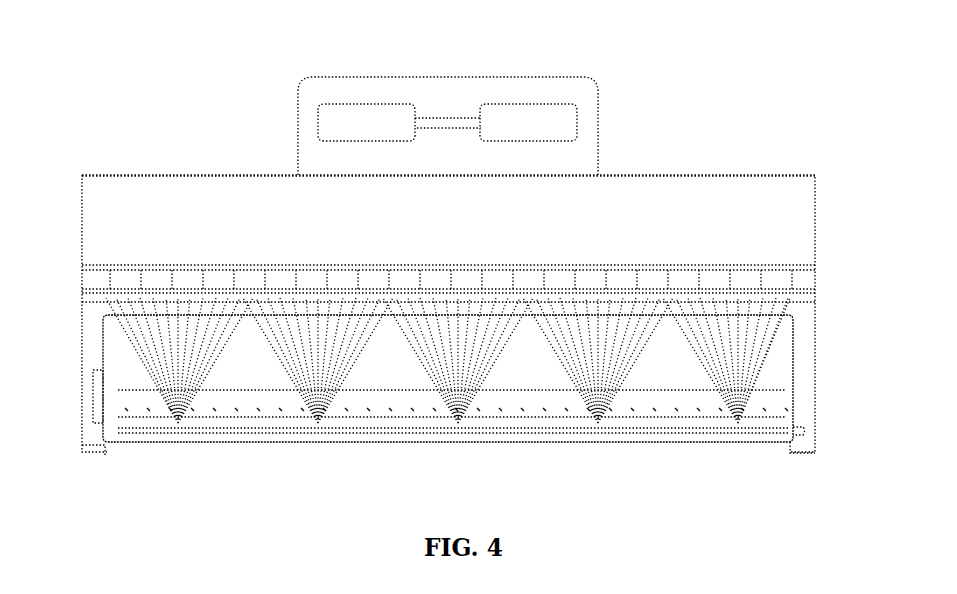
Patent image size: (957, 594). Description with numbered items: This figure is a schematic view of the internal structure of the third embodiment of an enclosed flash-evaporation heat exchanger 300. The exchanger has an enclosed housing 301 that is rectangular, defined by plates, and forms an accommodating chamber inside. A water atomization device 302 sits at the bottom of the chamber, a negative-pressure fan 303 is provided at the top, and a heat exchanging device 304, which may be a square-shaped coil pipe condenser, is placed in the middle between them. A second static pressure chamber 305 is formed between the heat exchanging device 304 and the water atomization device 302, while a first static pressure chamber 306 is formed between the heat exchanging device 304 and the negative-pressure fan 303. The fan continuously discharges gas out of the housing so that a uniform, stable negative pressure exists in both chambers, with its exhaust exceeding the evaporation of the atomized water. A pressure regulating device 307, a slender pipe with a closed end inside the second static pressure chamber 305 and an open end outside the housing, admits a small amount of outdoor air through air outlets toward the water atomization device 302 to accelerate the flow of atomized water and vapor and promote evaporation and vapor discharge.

The cleaning apparatus 300 is at (88, 51).
The enclosed housing 301 is at (720, 176).
The water atomization device 302 is at (318, 412).
The negative-pressure fan 303 is at (548, 120).
The heat exchanging device 304 is at (373, 290).
The second static pressure chamber 305 is at (780, 367).
The first static pressure chamber 306 is at (196, 203).
The pressure regulating device 307 is at (135, 405).